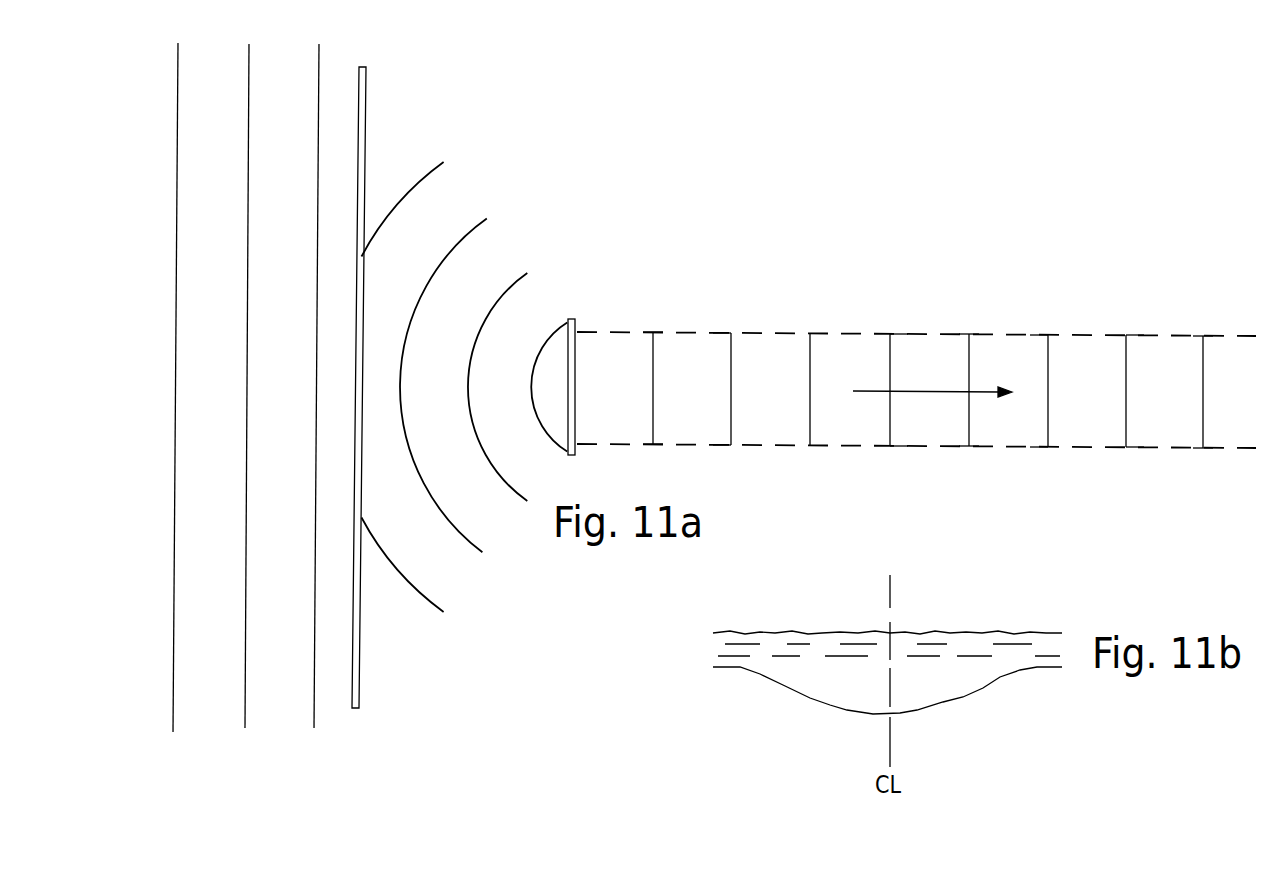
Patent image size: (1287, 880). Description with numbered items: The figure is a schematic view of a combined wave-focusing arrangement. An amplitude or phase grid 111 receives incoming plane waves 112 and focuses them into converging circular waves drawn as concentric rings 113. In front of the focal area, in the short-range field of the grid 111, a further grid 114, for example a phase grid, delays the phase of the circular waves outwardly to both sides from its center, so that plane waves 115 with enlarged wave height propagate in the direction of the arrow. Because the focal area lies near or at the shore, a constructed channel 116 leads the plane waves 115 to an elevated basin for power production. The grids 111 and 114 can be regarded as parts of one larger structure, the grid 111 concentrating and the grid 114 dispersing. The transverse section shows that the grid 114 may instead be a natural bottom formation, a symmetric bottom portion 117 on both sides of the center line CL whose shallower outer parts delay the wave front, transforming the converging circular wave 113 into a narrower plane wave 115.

In FIG. 11A, the amplitude or phase grid 111 is at (365, 113).
In FIG. 11A, the plane waves 112 is at (249, 99).
In FIG. 11A, the concentric rings 113 is at (468, 228).
In FIG. 11A, the grid 114 is at (575, 318).
In FIG. 11A, the plane waves 115 is at (653, 388).
In FIG. 11A, the constructed channel 116 is at (837, 331).
In FIG. 11B, the bottom portion 117 is at (918, 710).